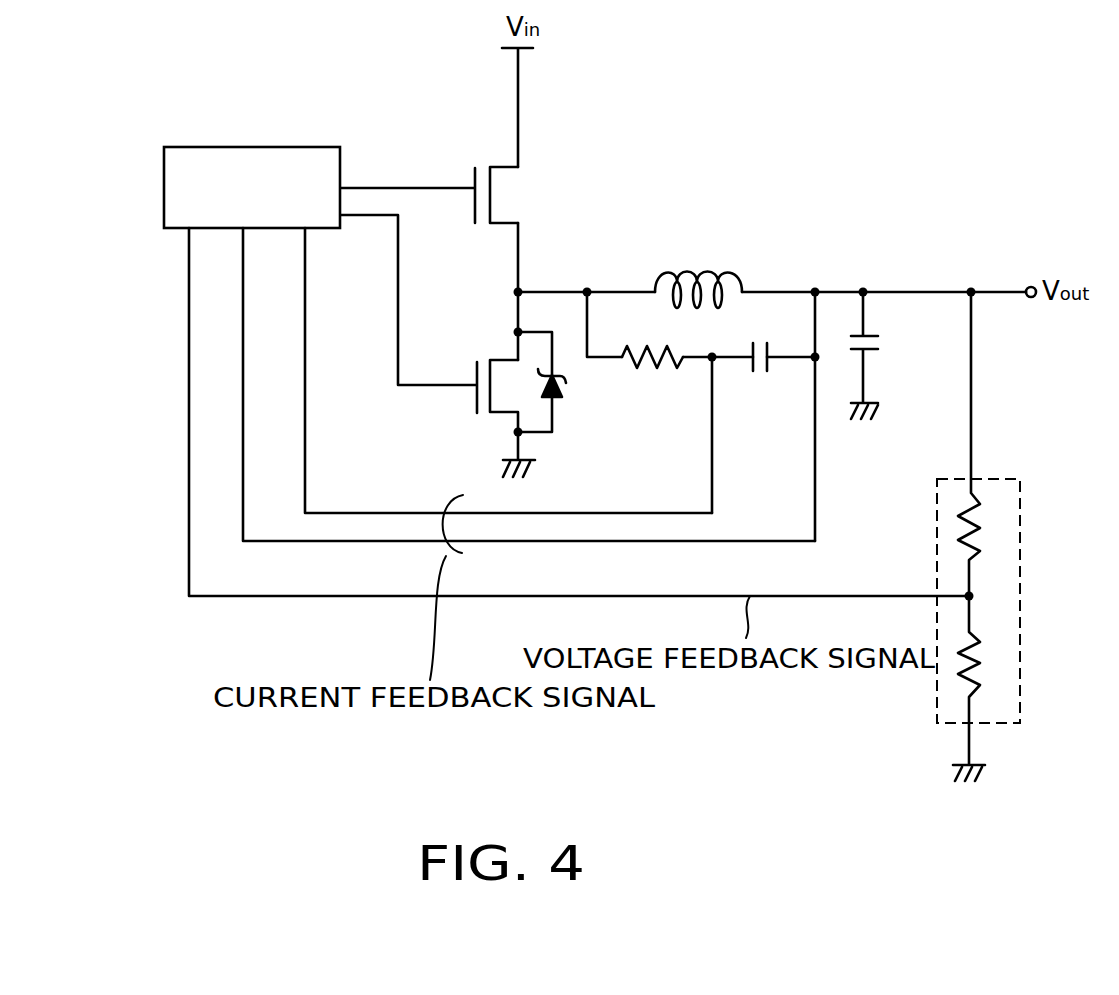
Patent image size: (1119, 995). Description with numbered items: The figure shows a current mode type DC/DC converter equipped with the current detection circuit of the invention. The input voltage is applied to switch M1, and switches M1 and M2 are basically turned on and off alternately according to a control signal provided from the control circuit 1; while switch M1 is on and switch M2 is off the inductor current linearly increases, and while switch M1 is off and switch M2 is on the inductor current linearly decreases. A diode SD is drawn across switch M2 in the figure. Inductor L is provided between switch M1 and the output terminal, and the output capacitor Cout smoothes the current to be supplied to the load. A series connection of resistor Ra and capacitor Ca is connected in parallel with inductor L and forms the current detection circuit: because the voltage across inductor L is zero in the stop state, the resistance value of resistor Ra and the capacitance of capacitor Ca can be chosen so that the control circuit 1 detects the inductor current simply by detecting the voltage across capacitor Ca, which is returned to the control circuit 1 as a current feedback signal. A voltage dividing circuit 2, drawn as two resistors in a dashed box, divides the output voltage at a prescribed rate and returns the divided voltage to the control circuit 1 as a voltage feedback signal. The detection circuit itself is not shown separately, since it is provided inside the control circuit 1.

The control circuit 1 is at (231, 147).
The voltage dividing circuit 2 is at (1020, 487).
The switch M1 is at (457, 188).
The switch M2 is at (429, 329).
The Schottky diode SD is at (559, 382).
The inductor L is at (698, 273).
The resistor Ra is at (652, 377).
The capacitor Ca is at (759, 375).
The output capacitor Cout is at (894, 355).